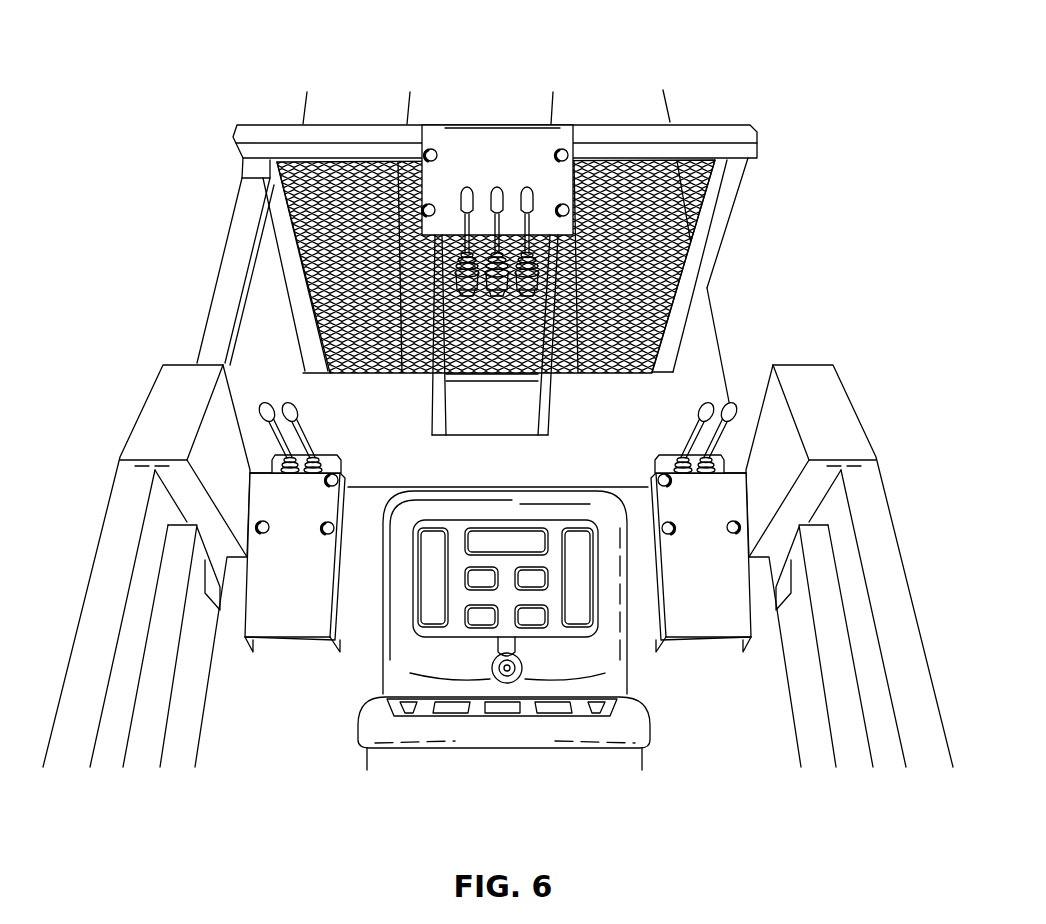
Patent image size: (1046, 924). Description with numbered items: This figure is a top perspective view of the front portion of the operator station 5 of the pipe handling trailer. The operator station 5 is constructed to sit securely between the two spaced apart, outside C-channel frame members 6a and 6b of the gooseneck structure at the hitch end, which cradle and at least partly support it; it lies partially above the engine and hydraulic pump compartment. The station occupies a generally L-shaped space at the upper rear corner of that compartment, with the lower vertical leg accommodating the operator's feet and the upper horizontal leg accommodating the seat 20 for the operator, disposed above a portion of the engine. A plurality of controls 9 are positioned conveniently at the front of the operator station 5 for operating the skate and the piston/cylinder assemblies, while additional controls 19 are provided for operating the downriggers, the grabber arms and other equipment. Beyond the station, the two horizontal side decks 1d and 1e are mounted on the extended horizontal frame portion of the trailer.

The horizontal side deck 1e is at (374, 104).
The horizontal side deck 1d is at (634, 104).
The controls 9 is at (528, 196).
The operator station 5 is at (838, 172).
The additional controls 19 is at (223, 438).
The outside frame member 6b is at (106, 567).
The outside frame member 6a is at (894, 567).
The seat 20 is at (558, 748).